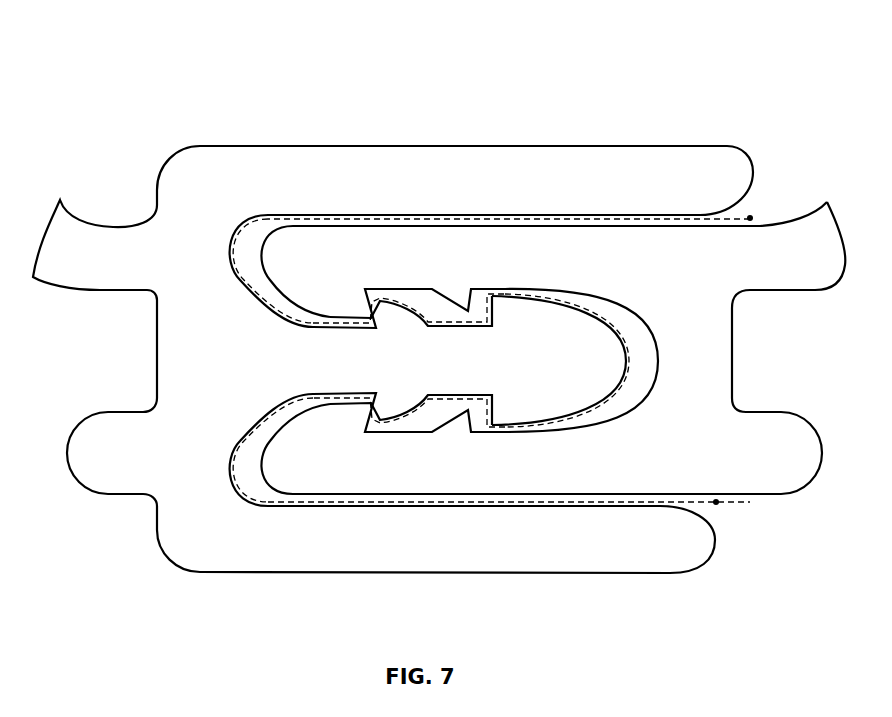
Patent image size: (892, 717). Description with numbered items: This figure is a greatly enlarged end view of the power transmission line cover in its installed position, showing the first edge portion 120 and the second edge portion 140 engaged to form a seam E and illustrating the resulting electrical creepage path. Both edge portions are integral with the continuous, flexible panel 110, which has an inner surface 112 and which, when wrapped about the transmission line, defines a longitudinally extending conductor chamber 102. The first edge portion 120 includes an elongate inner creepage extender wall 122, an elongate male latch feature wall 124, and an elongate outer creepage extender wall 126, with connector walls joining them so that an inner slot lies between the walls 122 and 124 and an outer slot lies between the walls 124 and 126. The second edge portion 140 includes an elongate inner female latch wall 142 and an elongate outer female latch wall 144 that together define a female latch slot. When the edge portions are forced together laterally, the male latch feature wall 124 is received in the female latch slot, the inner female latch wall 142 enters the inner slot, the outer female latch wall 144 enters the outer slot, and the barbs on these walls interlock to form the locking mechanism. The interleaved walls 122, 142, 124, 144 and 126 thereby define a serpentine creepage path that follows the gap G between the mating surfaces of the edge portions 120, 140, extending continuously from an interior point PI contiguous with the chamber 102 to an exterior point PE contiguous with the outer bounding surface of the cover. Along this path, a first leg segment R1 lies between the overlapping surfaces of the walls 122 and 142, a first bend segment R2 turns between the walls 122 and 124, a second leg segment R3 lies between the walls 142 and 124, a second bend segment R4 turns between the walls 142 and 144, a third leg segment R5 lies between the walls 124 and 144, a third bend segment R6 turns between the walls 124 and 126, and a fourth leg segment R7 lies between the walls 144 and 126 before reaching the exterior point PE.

The chamber 102 is at (221, 64).
The panel 110 is at (803, 224).
The inner surface 112 is at (823, 203).
The first edge portion 120 is at (121, 537).
The inner creepage extender wall 122 is at (355, 168).
The male latch feature wall 124 is at (562, 330).
The outer creepage extender wall 126 is at (480, 564).
The second edge portion 140 is at (781, 336).
The inner female latch wall 142 is at (322, 243).
The outer female latch wall 144 is at (345, 465).
The first leg segment R1 is at (423, 215).
The first bend segment R2 is at (231, 254).
The second leg segment R3 is at (417, 306).
The second bend segment R4 is at (636, 355).
The third leg segment R5 is at (410, 412).
The third bend segment R6 is at (231, 470).
The fourth leg segment R7 is at (445, 504).
The gap G is at (479, 201).
The interior point PI is at (752, 218).
The exterior point PE is at (717, 505).
The seam E is at (680, 609).